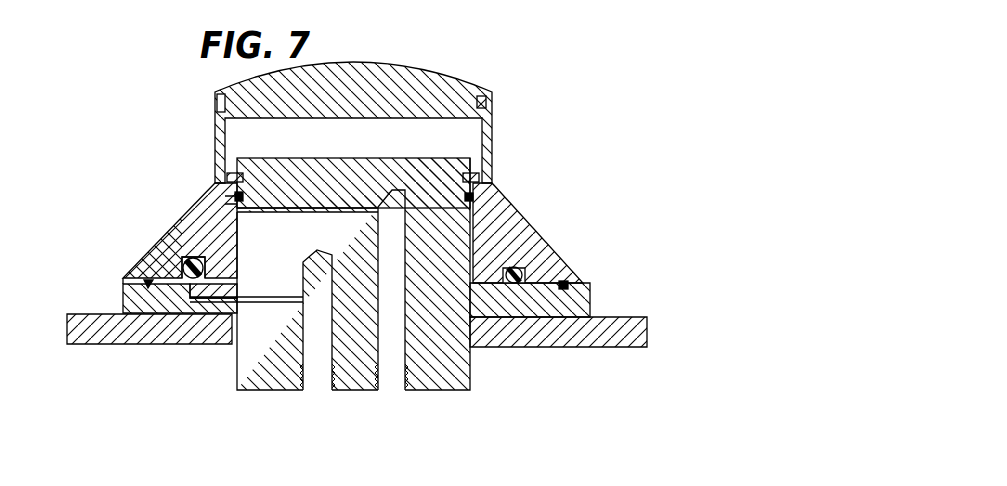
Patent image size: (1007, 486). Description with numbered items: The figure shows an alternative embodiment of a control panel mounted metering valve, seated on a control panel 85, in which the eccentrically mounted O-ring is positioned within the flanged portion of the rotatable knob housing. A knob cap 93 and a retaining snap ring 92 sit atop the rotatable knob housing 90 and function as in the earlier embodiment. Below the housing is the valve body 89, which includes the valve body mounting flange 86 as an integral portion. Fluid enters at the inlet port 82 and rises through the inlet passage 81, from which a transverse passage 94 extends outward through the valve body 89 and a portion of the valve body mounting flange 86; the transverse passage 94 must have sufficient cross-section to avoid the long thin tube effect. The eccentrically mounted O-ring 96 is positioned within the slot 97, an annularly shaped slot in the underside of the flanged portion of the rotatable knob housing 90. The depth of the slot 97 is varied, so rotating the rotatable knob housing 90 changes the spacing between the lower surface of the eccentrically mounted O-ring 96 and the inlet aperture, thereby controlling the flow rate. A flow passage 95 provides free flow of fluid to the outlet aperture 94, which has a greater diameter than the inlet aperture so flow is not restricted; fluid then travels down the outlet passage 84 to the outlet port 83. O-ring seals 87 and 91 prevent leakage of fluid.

The inlet passage 81 is at (310, 316).
The inlet port 82 is at (315, 373).
The outlet port 83 is at (390, 377).
The outlet passage 84 is at (390, 318).
The control panel 85 is at (646, 337).
The valve body mounting flange 86 is at (586, 302).
The O-ring seal 87 is at (563, 284).
The valve body 89 is at (457, 232).
The rotatable knob housing 90 is at (505, 207).
The O-ring seal 91 is at (470, 197).
The retaining snap ring 92 is at (468, 177).
The knob cap 93 is at (430, 78).
The transverse passage 94 is at (213, 303).
The flow passage 95 is at (230, 216).
The eccentrically mounted O-ring 96 is at (182, 258).
The slot 97 is at (183, 277).